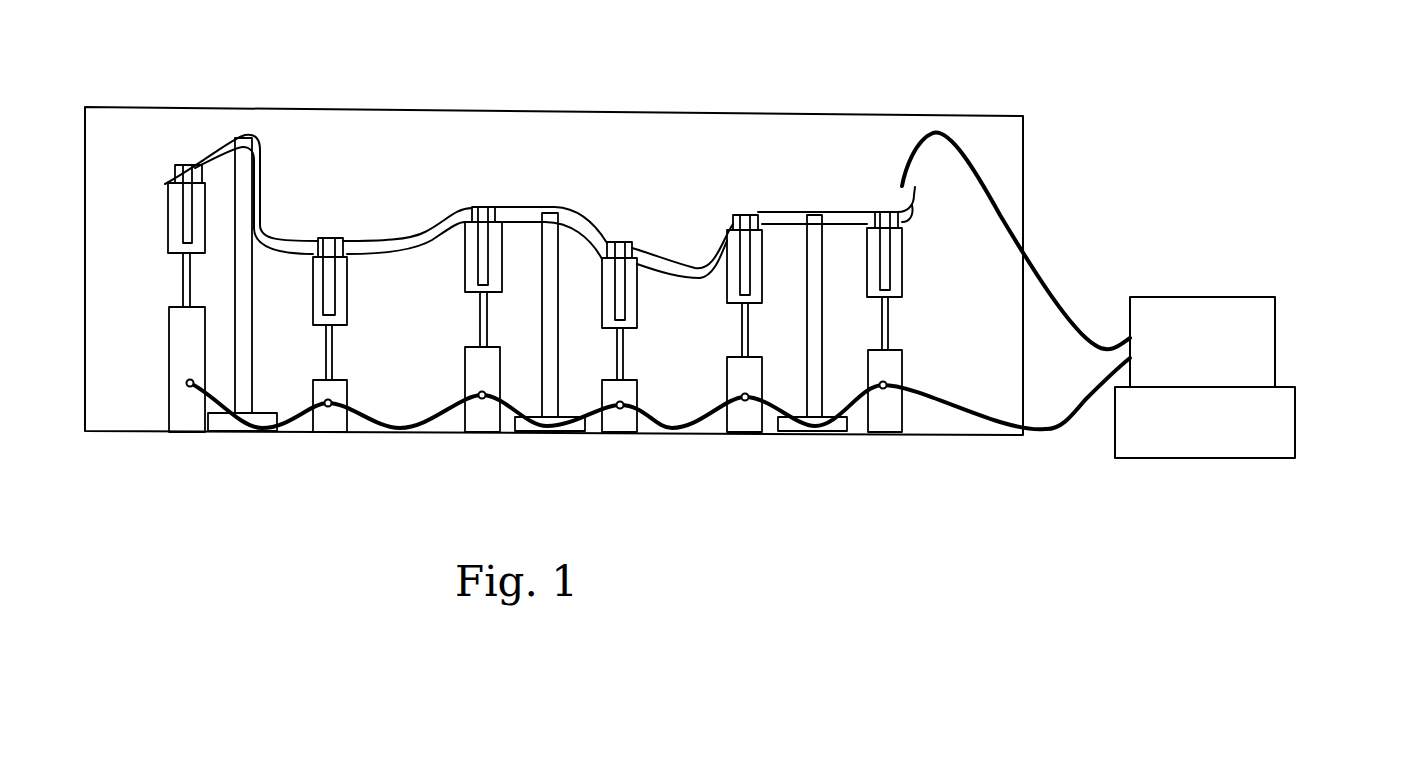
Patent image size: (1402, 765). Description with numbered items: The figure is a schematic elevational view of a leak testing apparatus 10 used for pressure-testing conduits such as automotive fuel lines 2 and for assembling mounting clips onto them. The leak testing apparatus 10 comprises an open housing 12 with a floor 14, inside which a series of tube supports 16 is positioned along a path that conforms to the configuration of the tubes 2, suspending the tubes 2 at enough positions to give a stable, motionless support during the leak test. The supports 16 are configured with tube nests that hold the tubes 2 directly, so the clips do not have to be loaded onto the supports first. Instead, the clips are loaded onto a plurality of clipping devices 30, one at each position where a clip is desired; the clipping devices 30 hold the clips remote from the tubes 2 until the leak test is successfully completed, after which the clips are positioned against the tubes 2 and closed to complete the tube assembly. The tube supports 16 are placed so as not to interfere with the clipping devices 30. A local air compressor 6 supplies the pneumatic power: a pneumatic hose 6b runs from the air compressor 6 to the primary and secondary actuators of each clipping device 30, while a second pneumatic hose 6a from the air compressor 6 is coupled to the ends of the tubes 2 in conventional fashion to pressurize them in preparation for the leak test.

The leak testing apparatus 10 is at (820, 90).
The open housing 12 is at (550, 142).
The fuel lines 2 is at (390, 238).
The clipping devices 30 is at (177, 328).
The tube supports 16 is at (243, 378).
The floor 14 is at (690, 435).
The air compressor 6 is at (1240, 307).
The pneumatic hose 6a is at (1040, 257).
The pneumatic hose 6b is at (1057, 428).